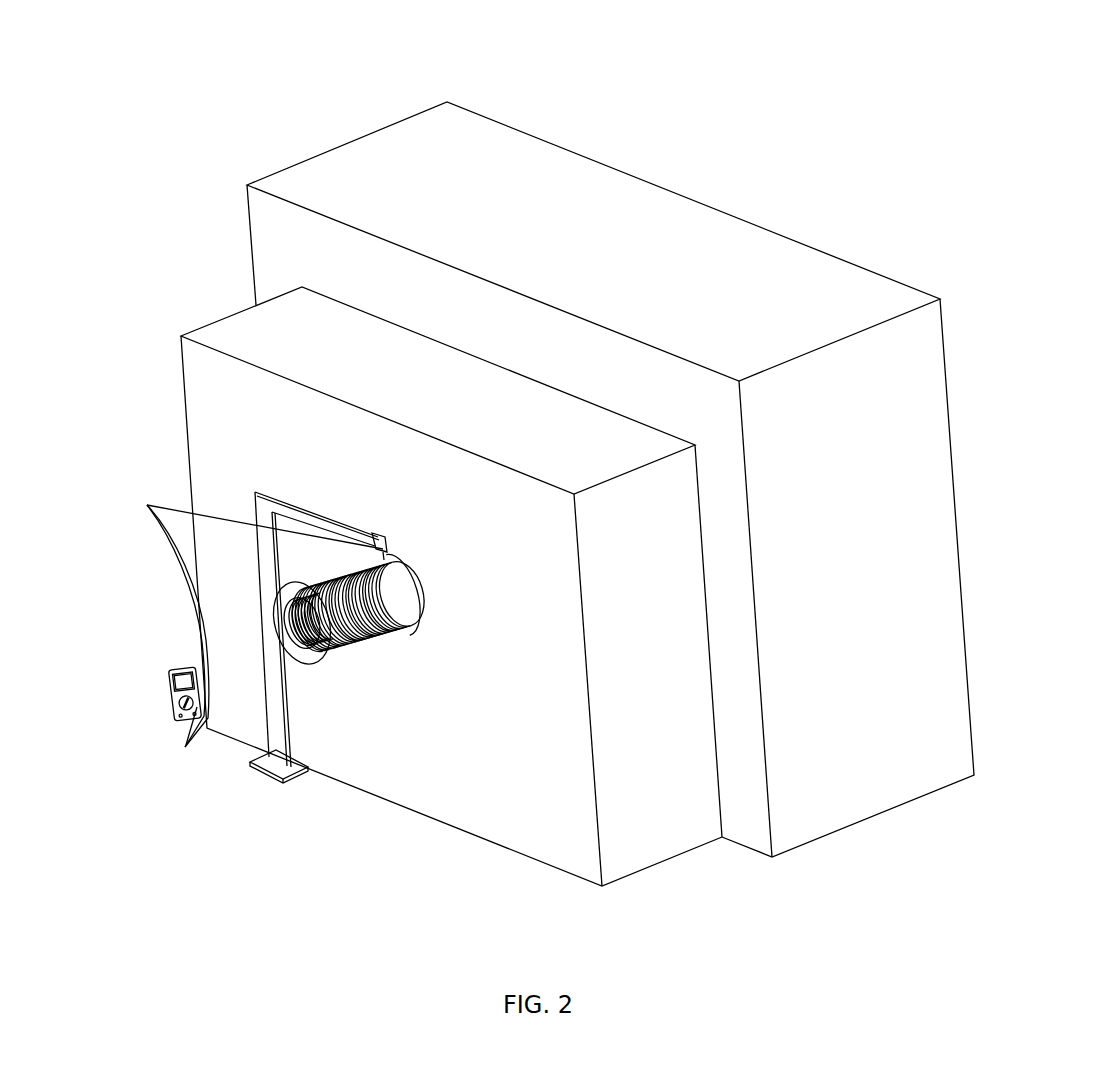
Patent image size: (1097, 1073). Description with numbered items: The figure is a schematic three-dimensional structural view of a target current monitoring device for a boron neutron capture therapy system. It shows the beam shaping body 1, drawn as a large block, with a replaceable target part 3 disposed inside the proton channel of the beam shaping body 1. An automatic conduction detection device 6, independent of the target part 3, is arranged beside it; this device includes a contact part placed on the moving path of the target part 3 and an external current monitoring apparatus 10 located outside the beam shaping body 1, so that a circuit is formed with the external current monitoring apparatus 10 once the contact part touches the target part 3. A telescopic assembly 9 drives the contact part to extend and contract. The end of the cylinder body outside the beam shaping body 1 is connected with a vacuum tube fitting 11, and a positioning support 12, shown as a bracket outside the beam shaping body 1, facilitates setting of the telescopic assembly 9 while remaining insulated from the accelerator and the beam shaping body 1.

The beam shaping body 1 is at (558, 173).
The target part 3 is at (394, 630).
The automatic conduction detection device 6 is at (147, 528).
The telescopic assembly 9 is at (383, 543).
The external current monitoring apparatus 10 is at (168, 670).
The vacuum tube fitting 11 is at (341, 649).
The positioning support 12 is at (273, 675).